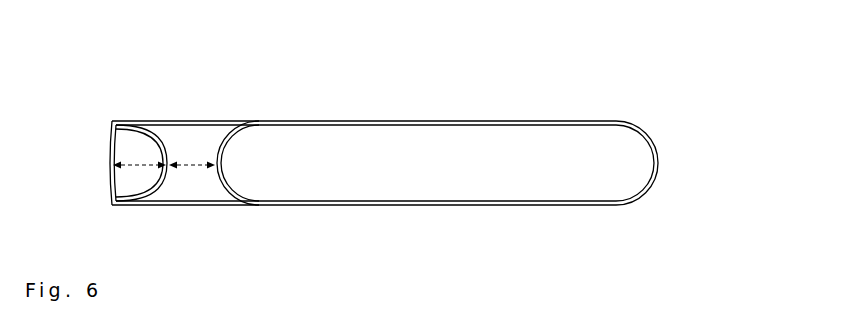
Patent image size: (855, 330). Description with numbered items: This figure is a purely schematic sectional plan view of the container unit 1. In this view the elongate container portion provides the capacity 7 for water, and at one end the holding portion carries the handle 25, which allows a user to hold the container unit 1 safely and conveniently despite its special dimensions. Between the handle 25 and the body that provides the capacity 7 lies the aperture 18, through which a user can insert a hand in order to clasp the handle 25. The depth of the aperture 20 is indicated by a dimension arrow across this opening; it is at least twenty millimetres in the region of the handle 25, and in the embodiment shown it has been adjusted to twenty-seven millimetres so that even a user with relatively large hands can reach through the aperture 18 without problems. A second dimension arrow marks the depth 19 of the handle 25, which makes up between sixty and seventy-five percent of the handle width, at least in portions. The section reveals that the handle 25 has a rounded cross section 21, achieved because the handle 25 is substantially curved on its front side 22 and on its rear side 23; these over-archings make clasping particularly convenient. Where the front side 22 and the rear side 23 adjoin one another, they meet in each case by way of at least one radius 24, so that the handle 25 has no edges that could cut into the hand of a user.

The container unit 1 is at (688, 112).
The capacity 7 is at (302, 163).
The aperture 18 is at (187, 180).
The depth of the handle 19 is at (135, 167).
The depth of the aperture 20 is at (190, 160).
The rounded cross section 21 is at (117, 207).
The front side 22 is at (110, 143).
The rear side 23 is at (157, 132).
The radius 24 is at (117, 123).
The handle 25 is at (110, 133).